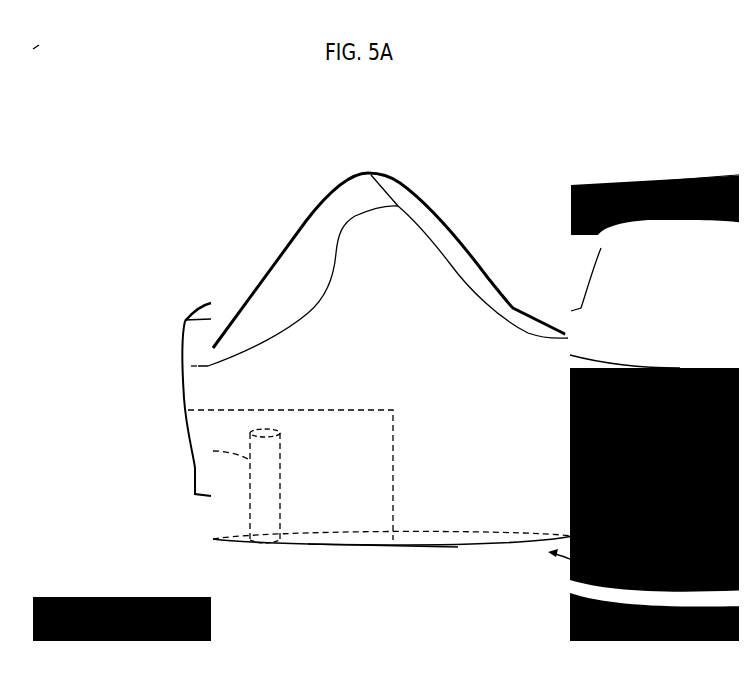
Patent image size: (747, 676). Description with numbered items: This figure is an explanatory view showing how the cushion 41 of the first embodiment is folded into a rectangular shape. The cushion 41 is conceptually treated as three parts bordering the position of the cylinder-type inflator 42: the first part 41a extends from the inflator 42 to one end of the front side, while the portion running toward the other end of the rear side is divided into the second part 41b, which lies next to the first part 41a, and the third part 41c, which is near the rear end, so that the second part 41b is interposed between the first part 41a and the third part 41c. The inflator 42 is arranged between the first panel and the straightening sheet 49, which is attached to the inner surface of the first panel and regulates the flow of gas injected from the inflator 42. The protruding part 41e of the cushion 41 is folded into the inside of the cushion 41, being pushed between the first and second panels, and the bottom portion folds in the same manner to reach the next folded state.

The cushion 41 is at (507, 187).
The first part 41a is at (223, 541).
The second part 41b is at (370, 541).
The third part 41c is at (557, 327).
The protruding part 41e is at (310, 197).
The inflator 42 is at (180, 402).
The straightening sheet 49 is at (385, 492).